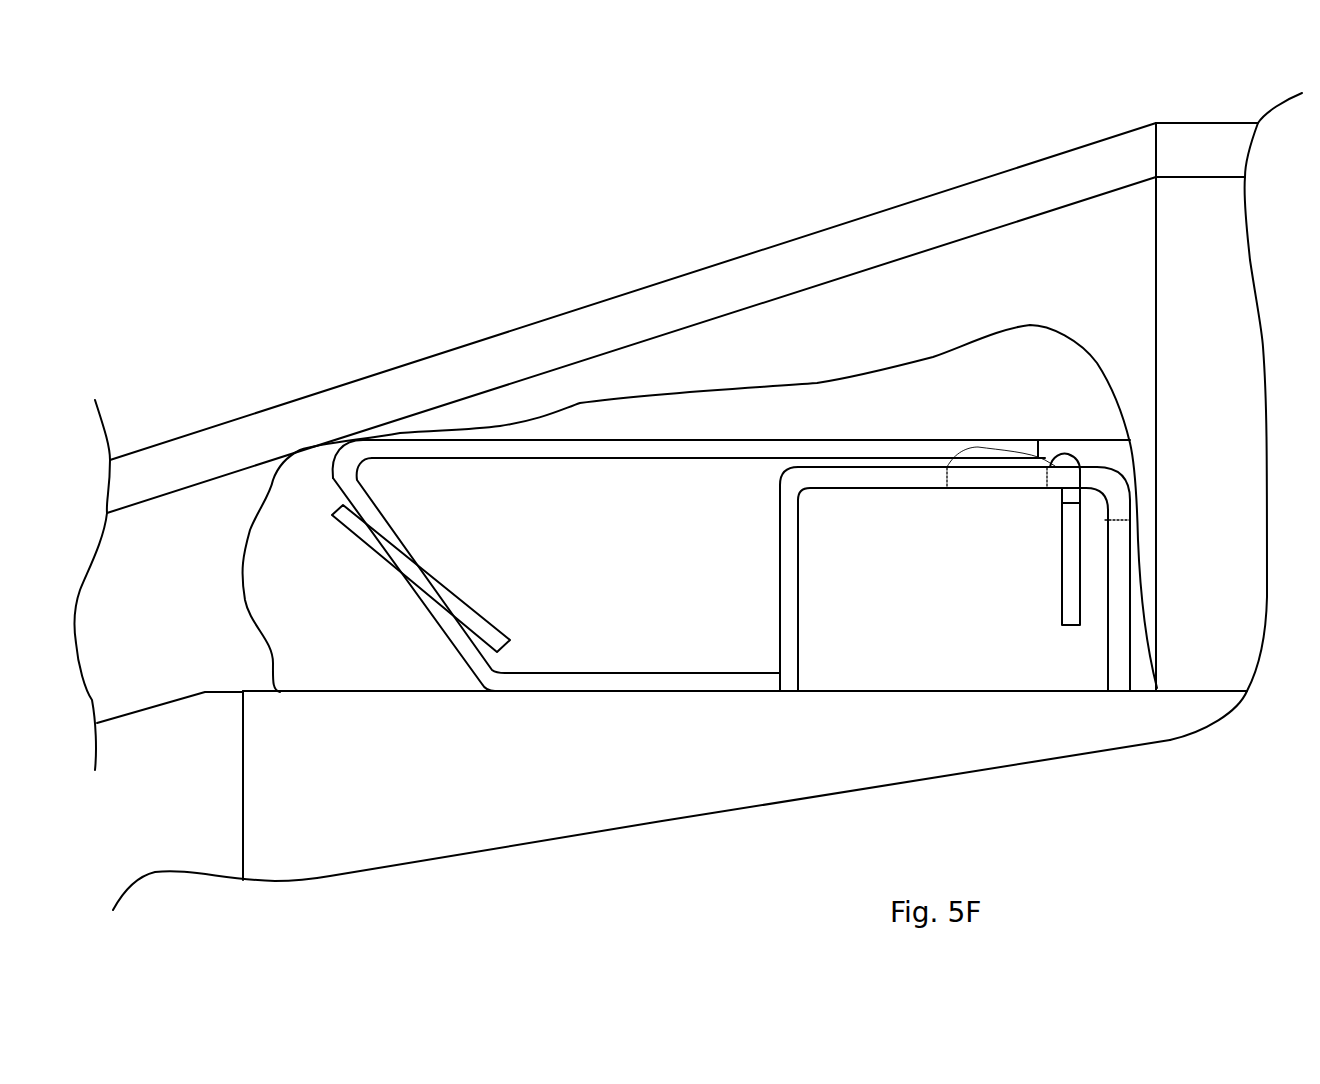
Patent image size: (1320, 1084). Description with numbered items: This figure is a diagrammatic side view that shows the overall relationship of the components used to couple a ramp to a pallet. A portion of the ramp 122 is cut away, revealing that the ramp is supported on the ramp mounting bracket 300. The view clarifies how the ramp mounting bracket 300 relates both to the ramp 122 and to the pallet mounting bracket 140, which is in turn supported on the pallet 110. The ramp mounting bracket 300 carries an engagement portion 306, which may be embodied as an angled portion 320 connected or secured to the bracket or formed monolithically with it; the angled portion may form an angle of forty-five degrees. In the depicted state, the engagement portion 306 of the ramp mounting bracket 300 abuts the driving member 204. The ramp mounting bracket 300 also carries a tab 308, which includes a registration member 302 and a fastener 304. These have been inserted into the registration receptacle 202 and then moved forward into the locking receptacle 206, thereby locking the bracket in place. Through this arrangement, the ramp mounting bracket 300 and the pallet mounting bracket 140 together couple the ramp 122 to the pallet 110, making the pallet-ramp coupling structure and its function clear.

The pallet 110 is at (492, 768).
The ramp 122 is at (824, 343).
The pallet mounting bracket 140 is at (667, 683).
The registration receptacle 202 is at (978, 447).
The driving member 204 is at (432, 618).
The locking receptacle 206 is at (1063, 457).
The ramp mounting bracket 300 is at (668, 447).
The registration member 302 is at (1042, 622).
The fastener 304 is at (1045, 509).
The engagement portion 306 is at (476, 575).
The tab 308 is at (1057, 452).
The angled portion 320 is at (417, 560).